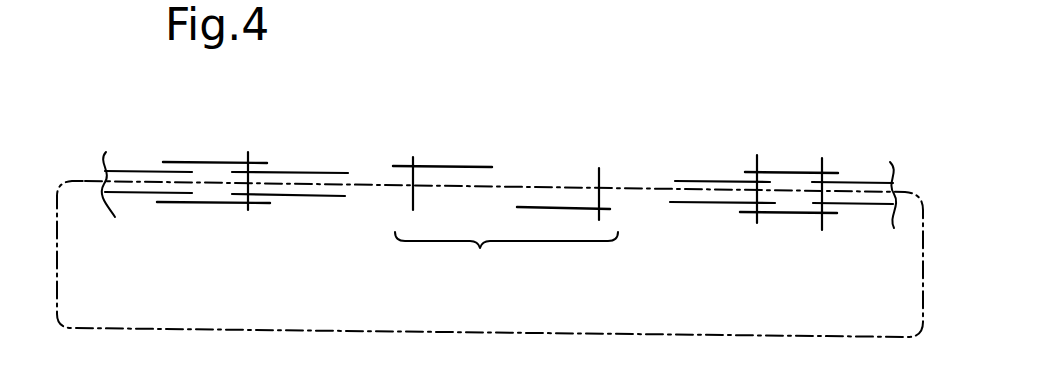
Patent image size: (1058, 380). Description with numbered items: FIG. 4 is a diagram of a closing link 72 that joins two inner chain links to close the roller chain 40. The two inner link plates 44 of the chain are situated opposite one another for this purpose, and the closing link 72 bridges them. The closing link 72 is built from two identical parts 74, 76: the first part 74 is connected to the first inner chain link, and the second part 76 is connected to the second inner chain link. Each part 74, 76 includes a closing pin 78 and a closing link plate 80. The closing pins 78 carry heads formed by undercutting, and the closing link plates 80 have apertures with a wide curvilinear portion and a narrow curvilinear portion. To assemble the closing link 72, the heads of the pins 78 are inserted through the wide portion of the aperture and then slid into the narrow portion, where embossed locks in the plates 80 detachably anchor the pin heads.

The roller chain 40 is at (215, 224).
The inner link plates 44 is at (318, 198).
The closing link 72 is at (506, 259).
The first part 74 is at (451, 165).
The second part 76 is at (569, 186).
The closing pin 78 is at (412, 178).
The closing link plate 80 is at (432, 163).